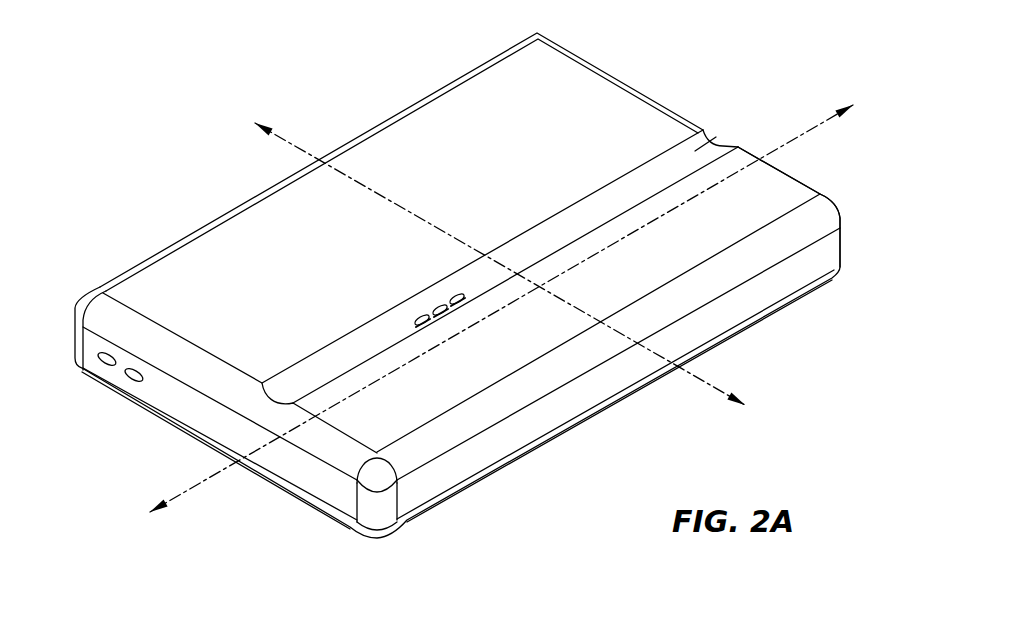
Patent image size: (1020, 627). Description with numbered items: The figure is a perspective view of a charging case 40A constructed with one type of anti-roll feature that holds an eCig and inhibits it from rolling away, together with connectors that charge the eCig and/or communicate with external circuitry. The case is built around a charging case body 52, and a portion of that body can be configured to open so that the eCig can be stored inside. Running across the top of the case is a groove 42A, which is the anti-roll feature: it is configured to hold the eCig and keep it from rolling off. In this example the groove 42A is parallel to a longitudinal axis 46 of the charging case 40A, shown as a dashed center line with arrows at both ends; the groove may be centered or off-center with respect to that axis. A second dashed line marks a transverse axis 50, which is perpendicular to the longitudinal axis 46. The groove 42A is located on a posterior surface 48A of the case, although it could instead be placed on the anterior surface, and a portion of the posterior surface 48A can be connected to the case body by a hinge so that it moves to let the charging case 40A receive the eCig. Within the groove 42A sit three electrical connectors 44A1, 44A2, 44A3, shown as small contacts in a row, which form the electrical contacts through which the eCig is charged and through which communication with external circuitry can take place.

The charging case 40A is at (153, 224).
The groove 42A is at (720, 141).
The connector 44A1 is at (419, 320).
The connector 44A2 is at (440, 305).
The connector 44A3 is at (460, 293).
The longitudinal axis 46 is at (193, 486).
The posterior surface 48A is at (773, 193).
The transverse axis 50 is at (748, 398).
The charging case body 52 is at (478, 489).